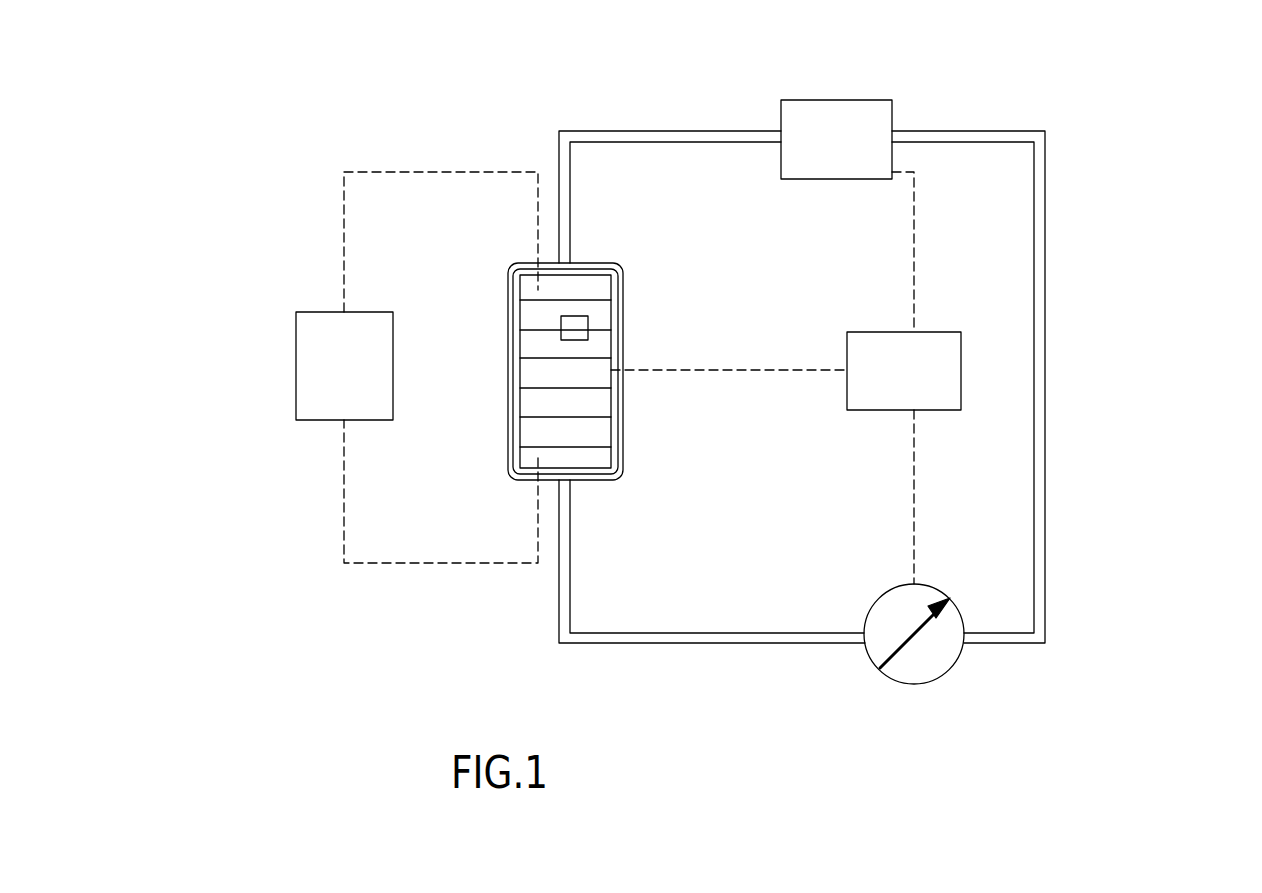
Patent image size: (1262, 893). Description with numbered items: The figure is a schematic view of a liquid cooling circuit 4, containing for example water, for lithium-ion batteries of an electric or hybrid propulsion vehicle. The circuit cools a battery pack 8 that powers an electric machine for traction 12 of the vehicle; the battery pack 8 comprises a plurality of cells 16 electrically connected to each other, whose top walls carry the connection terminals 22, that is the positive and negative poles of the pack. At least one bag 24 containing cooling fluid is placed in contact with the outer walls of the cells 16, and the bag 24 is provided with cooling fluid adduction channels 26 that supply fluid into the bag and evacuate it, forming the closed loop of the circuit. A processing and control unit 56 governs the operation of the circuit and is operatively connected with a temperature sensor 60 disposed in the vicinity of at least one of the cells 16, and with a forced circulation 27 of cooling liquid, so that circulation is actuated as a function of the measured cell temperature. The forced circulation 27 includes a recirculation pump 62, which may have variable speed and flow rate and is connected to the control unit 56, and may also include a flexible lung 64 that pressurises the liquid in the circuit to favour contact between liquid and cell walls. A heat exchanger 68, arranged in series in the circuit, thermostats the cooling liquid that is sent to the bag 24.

The cooling circuit 4 is at (696, 379).
The battery pack 8 is at (587, 307).
The electric machine for traction 12 is at (318, 370).
The cells 16 is at (627, 428).
The connection terminals 22 is at (538, 290).
The bag 24 is at (612, 455).
The cooling fluid adduction channels 26 is at (670, 130).
The forced circulation 27 is at (979, 665).
The processing and control unit 56 is at (937, 362).
The temperature sensor 60 is at (592, 328).
The recirculation pump 62 is at (957, 663).
The flexible lung 64 is at (628, 282).
The heat exchanger 68 is at (872, 125).